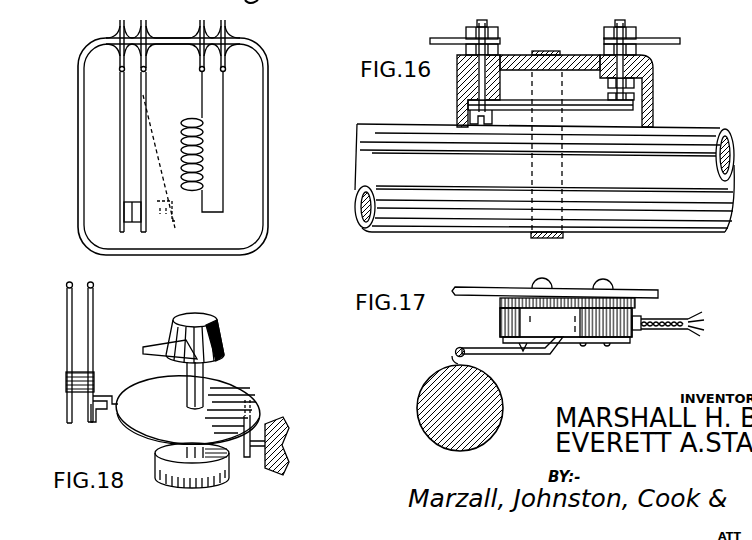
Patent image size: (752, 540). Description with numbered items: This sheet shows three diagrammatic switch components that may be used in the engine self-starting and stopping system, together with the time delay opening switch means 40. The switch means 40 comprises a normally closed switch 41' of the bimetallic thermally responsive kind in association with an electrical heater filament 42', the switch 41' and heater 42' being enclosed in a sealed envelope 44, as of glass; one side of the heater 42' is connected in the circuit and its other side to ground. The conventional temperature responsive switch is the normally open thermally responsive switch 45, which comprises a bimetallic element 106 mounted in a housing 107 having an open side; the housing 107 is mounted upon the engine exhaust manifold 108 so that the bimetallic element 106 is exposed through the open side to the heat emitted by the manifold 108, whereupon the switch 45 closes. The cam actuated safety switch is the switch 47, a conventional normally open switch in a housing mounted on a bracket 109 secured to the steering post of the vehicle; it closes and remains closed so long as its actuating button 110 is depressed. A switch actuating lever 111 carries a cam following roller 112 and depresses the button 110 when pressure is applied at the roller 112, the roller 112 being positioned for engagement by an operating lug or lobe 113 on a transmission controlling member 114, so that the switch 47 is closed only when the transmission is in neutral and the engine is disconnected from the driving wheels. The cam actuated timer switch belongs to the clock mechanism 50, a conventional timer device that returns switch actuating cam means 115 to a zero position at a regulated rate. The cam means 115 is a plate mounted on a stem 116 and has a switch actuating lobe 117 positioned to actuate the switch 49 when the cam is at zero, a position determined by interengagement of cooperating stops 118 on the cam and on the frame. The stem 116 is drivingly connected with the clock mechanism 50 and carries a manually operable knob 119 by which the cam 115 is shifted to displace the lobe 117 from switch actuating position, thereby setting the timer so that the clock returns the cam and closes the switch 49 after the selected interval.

In FIG. 15, the time delay opening switch means 40 is at (268, 82).
In FIG. 15, the sealed envelope 44 is at (268, 158).
In FIG. 15, the normally closed switch 41' is at (147, 173).
In FIG. 15, the electrical heater filament 42' is at (204, 173).
In FIG. 16, the bimetallic element 106 is at (518, 98).
In FIG. 16, the housing 107 is at (582, 62).
In FIG. 16, the normally open thermally responsive switch 45 is at (608, 88).
In FIG. 16, the engine exhaust manifold 108 is at (680, 140).
In FIG. 17, the bracket 109 is at (648, 290).
In FIG. 17, the switch 47 is at (500, 312).
In FIG. 17, the actuating button 110 is at (523, 351).
In FIG. 17, the switch actuating lever 111 is at (495, 354).
In FIG. 17, the cam following roller 112 is at (455, 354).
In FIG. 17, the operating lug 113 is at (453, 358).
In FIG. 17, the transmission controlling member 114 is at (436, 432).
In FIG. 18, the manually operable knob 119 is at (205, 318).
In FIG. 18, the switch actuating cam means 115 is at (238, 392).
In FIG. 18, the switch actuating lobe 117 is at (121, 396).
In FIG. 18, the stem 116 is at (186, 392).
In FIG. 18, the switch 49 is at (84, 418).
In FIG. 18, the clock mechanism 50 is at (152, 461).
In FIG. 18, the cooperating stops 118 is at (246, 463).